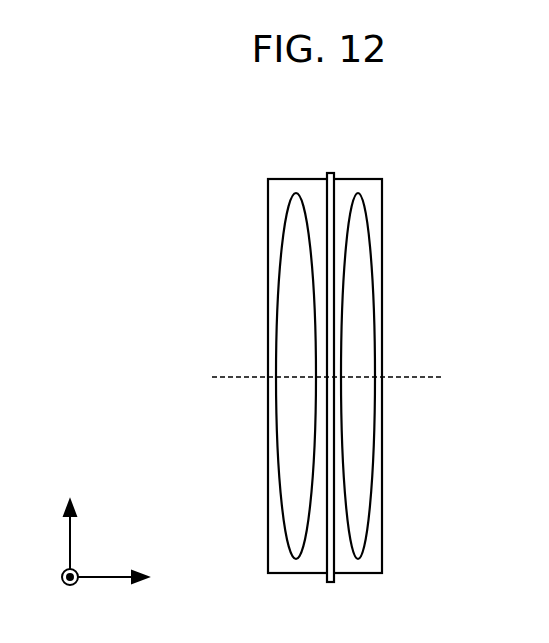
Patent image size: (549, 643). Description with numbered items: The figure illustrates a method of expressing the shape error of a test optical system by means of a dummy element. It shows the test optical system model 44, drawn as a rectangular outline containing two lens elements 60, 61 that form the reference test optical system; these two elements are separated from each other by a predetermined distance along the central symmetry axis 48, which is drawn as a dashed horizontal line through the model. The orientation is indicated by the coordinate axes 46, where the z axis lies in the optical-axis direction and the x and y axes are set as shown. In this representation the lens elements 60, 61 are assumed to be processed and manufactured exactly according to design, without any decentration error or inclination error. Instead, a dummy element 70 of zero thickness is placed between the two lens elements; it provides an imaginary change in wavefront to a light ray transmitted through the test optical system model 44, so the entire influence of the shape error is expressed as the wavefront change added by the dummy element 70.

The test optical system model 44 is at (280, 187).
The coordinate axes reference sign 46 is at (117, 524).
The symmetry axis 48 is at (234, 378).
The lens element 60 is at (287, 268).
The lens element 61 is at (364, 262).
The dummy element 70 is at (331, 172).